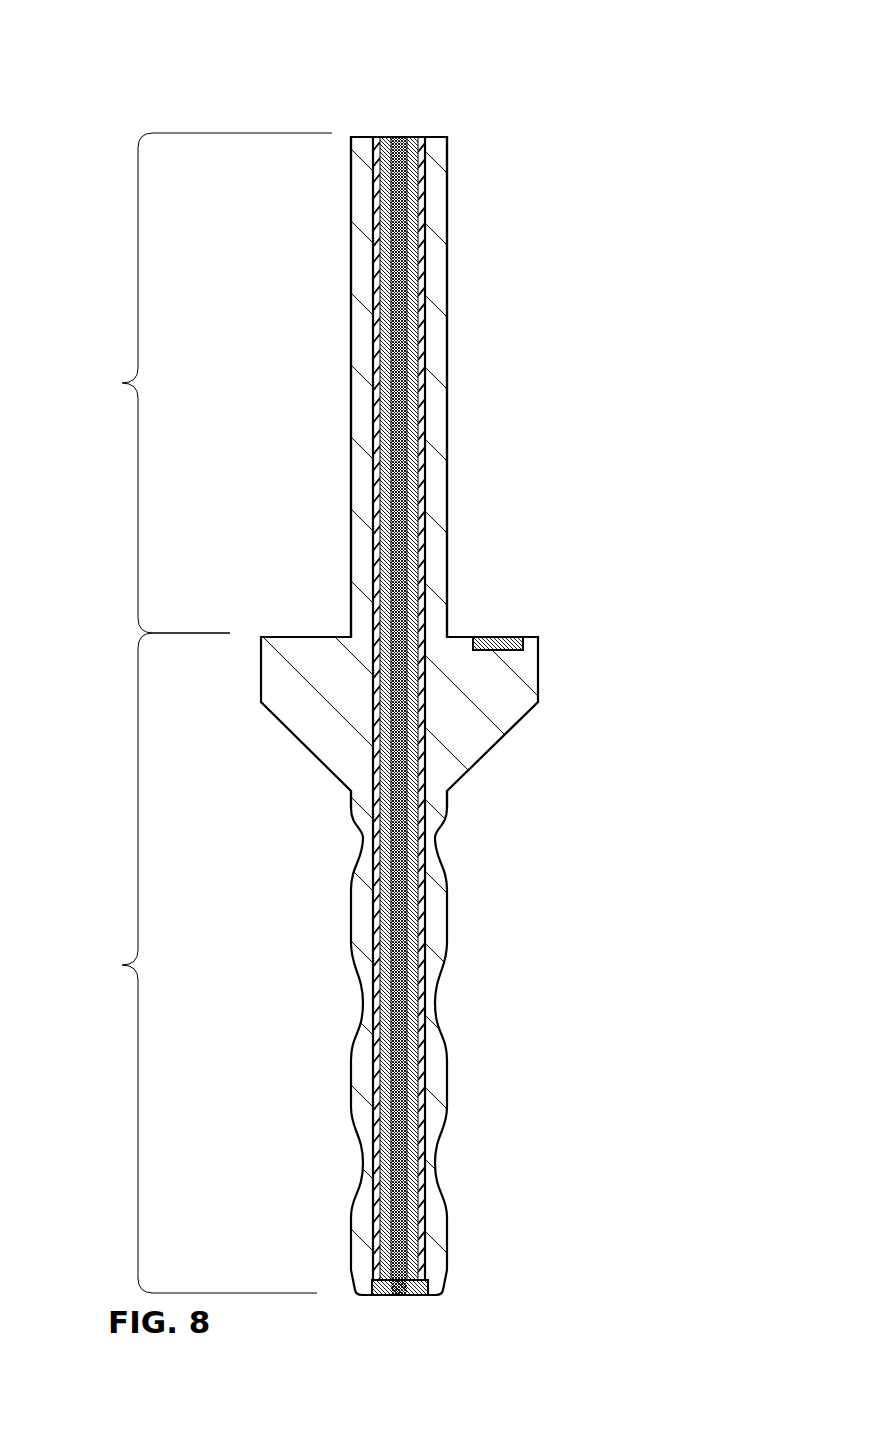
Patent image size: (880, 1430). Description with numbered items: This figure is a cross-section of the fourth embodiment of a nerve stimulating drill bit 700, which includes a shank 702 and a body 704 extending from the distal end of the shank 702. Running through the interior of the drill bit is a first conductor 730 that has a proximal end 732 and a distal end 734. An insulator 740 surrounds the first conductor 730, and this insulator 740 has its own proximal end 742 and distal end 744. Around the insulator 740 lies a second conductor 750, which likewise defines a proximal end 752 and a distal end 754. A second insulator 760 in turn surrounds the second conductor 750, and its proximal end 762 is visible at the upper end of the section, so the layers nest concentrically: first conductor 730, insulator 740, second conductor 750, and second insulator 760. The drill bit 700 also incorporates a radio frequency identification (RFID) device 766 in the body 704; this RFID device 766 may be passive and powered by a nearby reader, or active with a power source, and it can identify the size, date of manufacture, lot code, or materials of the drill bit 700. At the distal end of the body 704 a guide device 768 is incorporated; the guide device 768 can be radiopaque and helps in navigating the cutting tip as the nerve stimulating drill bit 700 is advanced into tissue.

The nerve stimulating drill bit 700 is at (613, 136).
The shank 702 is at (188, 383).
The body 704 is at (181, 963).
The first conductor 730 is at (402, 465).
The proximal end of first conductor 732 is at (424, 162).
The distal end of first conductor 734 is at (430, 1236).
The insulator 740 is at (398, 518).
The proximal end of insulator 742 is at (376, 158).
The distal end of insulator 744 is at (374, 1246).
The second conductor 750 is at (412, 543).
The proximal end of second conductor 752 is at (424, 141).
The distal end of second conductor 754 is at (427, 1255).
The second insulator 760 is at (424, 569).
The proximal end of second insulator 762 is at (375, 141).
The radio frequency identification (RFID) device 766 is at (508, 636).
The guide device 768 is at (427, 1295).